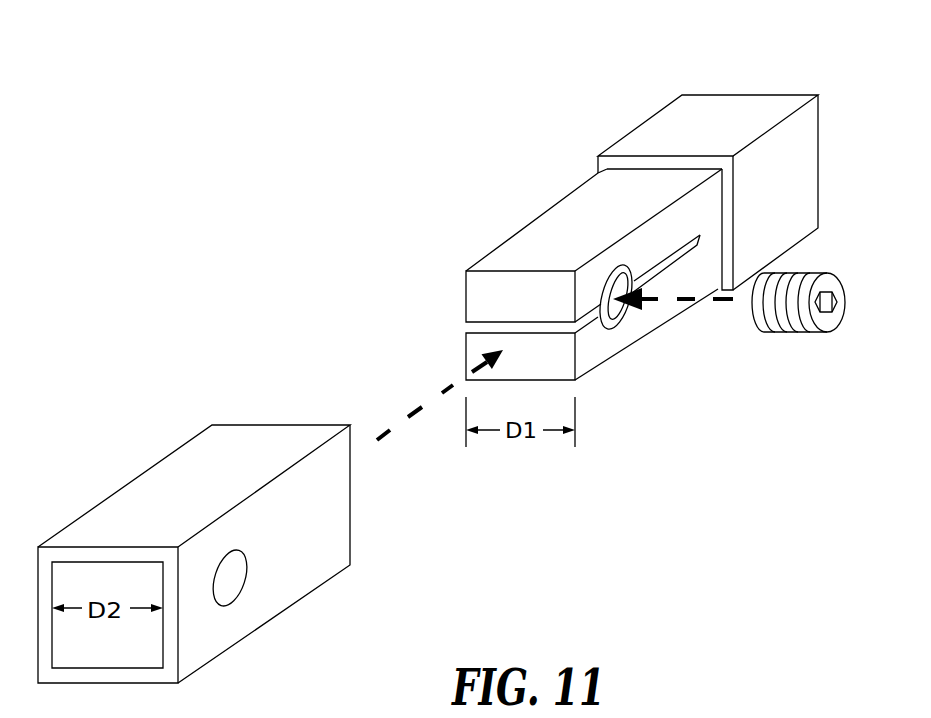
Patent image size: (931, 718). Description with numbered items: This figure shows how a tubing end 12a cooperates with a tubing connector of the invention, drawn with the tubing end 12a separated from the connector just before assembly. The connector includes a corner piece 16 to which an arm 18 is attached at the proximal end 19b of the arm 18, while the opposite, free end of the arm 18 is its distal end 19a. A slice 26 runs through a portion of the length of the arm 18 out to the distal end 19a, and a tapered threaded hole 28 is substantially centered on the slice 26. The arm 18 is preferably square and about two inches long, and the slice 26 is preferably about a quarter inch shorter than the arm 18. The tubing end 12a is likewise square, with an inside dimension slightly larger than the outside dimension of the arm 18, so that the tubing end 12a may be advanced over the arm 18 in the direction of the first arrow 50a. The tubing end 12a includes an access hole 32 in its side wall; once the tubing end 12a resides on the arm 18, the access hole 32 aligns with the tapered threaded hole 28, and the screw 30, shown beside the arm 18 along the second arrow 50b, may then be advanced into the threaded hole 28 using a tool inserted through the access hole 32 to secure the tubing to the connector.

The tubing end 12a is at (148, 497).
The corner piece 16 is at (663, 130).
The arm 18 is at (550, 242).
The distal end 19a is at (442, 248).
The proximal end 19b is at (578, 143).
The slice 26 is at (466, 325).
The tapered threaded hole 28 is at (615, 330).
The screw 30 is at (790, 333).
The access hole 32 is at (230, 575).
The first arrow 50a is at (440, 393).
The second arrow 50b is at (688, 300).